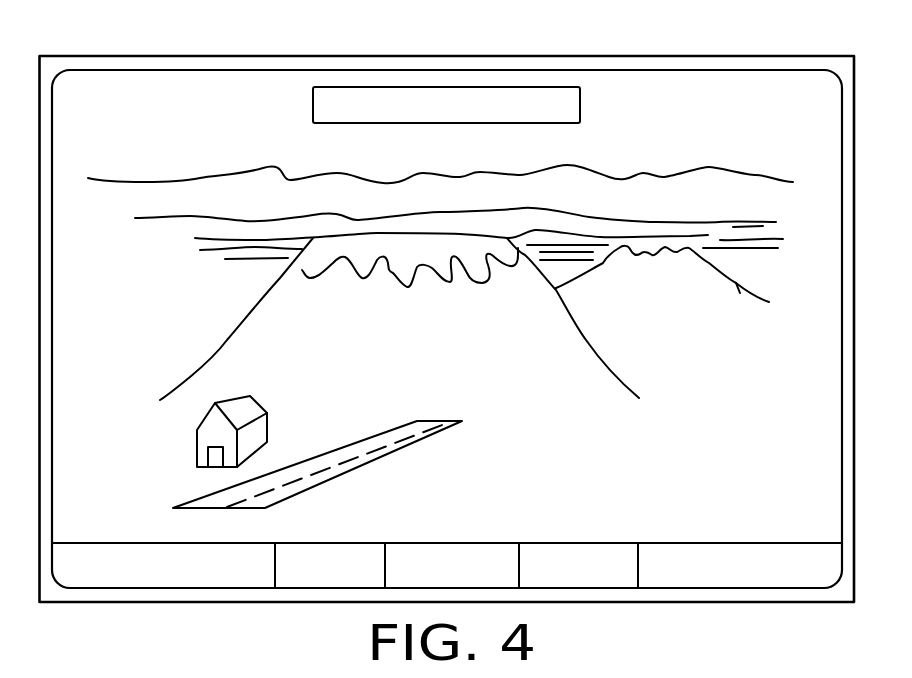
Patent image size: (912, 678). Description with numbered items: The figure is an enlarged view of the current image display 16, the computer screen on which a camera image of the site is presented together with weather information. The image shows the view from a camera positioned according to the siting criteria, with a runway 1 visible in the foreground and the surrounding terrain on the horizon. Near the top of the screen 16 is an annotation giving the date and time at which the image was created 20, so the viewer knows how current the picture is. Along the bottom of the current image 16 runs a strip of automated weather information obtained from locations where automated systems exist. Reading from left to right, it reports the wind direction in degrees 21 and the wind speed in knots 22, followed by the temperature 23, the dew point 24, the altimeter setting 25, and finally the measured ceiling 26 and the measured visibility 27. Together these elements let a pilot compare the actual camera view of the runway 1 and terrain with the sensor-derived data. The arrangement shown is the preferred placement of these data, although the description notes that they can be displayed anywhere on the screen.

The current image display 16 is at (92, 55).
The date and time annotation 20 is at (581, 104).
The runway 1 is at (347, 445).
The wind direction 21 is at (110, 542).
The wind speed 22 is at (228, 543).
The temperature 23 is at (350, 542).
The dew point 24 is at (456, 542).
The altimeter setting 25 is at (574, 542).
The measured ceiling 26 is at (686, 543).
The measured visibility 27 is at (804, 577).